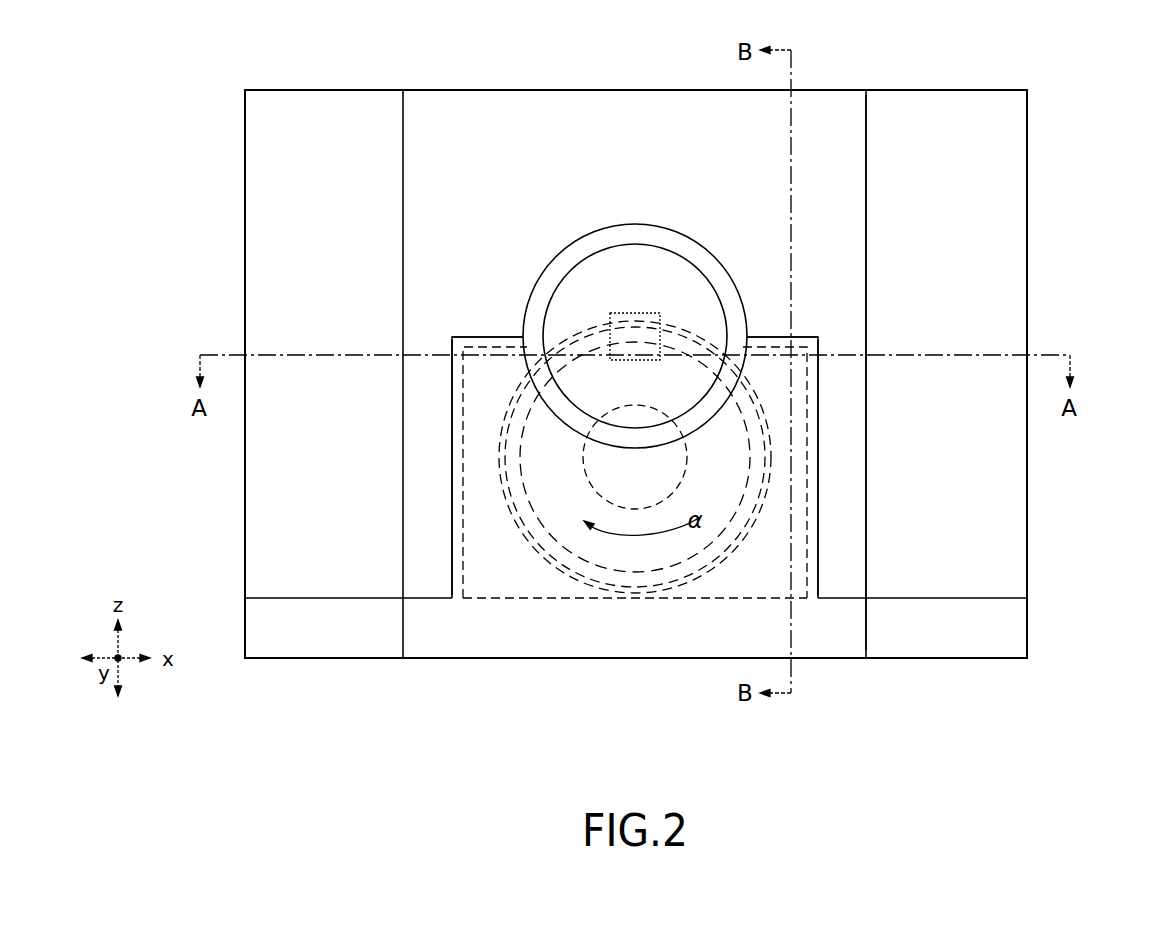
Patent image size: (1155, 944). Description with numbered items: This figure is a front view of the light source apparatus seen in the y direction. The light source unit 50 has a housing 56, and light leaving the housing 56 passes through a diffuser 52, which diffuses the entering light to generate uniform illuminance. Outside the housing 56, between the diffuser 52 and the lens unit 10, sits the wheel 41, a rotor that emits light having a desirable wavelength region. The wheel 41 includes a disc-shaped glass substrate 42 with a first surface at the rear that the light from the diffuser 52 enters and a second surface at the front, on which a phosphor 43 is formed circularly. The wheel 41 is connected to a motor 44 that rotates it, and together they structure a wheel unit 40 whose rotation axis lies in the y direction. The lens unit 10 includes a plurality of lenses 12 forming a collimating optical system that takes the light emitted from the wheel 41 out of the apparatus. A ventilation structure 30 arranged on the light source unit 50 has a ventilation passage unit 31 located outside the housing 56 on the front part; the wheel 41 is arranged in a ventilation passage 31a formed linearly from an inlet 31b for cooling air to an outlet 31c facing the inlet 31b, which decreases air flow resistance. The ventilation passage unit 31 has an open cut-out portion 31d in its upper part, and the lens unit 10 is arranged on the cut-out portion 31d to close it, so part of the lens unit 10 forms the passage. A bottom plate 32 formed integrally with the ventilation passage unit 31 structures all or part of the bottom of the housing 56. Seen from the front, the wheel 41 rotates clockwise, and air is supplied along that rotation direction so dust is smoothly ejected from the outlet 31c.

The lens unit 10 is at (572, 226).
The lenses 12 is at (680, 280).
The ventilation structure 30 is at (822, 515).
The ventilation passage unit 31 is at (803, 337).
The ventilation passage 31a is at (487, 372).
The inlet 31b is at (808, 430).
The outlet 31c is at (463, 427).
The cut-out portion 31d is at (583, 393).
The bottom plate 32 is at (945, 632).
The wheel unit 40 is at (524, 553).
The wheel 41 is at (645, 705).
The glass substrate 42 is at (613, 547).
The phosphor 43 is at (573, 558).
The motor 44 is at (645, 507).
The light source unit 50 is at (1032, 147).
The diffuser 52 is at (637, 312).
The housing 56 is at (1000, 288).